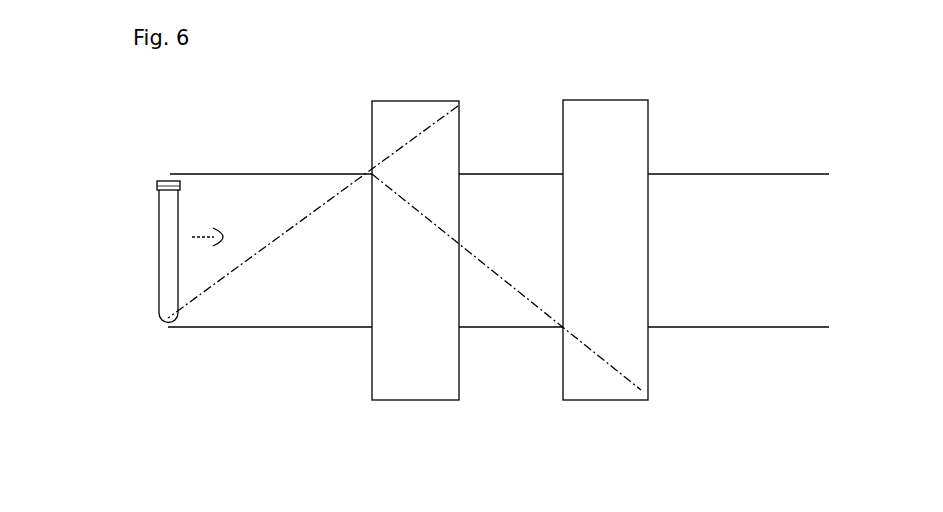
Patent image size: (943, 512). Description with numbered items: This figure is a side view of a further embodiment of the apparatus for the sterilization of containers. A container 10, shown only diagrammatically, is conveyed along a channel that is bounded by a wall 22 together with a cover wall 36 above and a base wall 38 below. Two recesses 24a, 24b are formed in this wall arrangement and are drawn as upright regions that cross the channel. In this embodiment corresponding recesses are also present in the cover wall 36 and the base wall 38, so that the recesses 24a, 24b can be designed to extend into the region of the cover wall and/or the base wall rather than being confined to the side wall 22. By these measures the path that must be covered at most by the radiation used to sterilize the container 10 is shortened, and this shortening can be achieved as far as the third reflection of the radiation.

The container 10 is at (157, 218).
The wall 22 is at (278, 173).
The recess 24a is at (420, 403).
The recess 24b is at (561, 403).
The cover wall 36 is at (731, 174).
The base wall 38 is at (734, 327).